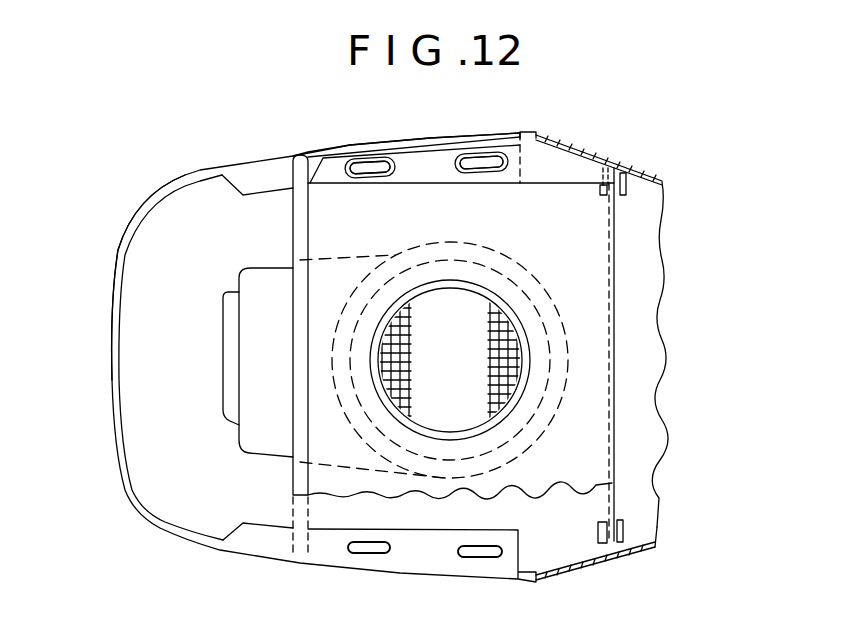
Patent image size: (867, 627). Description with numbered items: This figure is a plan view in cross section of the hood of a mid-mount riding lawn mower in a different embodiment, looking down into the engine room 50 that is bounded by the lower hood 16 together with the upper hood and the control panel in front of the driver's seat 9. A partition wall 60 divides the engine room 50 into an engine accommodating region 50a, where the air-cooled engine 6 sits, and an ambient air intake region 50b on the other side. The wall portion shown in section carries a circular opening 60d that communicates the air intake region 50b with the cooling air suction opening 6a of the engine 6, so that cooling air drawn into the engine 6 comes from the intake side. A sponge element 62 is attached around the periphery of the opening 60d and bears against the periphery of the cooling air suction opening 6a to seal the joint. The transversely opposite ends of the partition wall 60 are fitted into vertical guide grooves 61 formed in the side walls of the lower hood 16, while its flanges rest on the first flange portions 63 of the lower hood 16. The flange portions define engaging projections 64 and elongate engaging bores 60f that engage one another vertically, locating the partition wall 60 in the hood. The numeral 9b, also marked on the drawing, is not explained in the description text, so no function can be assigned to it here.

The engine room 50 is at (145, 263).
The engine accommodating region 50a is at (133, 260).
The ambient air intake region 50b is at (636, 273).
The lower hood 16 is at (243, 158).
The first flange portions 63 is at (265, 178).
The partition wall 60 is at (618, 339).
The engaging projections 64 is at (380, 167).
The elongate engaging bores 60f is at (363, 178).
The circular opening 60d is at (463, 282).
The cooling air suction opening 6a is at (478, 322).
The sponge element 62 is at (434, 360).
The engine 6 is at (223, 330).
The driver's seat 9 is at (589, 152).
The hinge edge 9b is at (648, 174).
The vertical guide grooves 61 is at (650, 205).